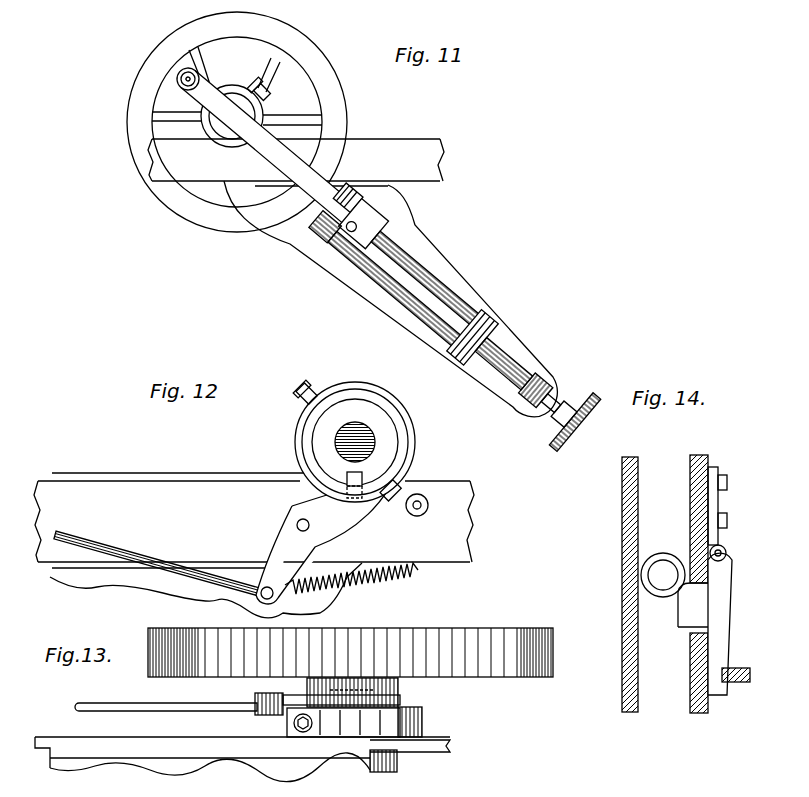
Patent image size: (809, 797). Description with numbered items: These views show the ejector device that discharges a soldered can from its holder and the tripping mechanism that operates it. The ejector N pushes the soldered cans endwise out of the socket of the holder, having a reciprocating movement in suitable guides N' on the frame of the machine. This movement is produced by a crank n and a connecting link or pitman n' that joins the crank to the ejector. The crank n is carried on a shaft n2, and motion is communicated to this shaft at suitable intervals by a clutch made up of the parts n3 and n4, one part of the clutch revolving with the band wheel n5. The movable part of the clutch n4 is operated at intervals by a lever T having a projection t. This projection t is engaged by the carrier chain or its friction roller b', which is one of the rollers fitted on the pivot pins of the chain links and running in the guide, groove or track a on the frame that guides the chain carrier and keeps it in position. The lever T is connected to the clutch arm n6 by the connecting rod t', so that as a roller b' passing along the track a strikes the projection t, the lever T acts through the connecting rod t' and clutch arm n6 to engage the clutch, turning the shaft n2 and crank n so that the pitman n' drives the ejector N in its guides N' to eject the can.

In FIG. 11, the crank n is at (182, 112).
In FIG. 11, the connecting link or pitman n' is at (279, 152).
In FIG. 11, the band wheel n5 is at (237, 122).
In FIG. 13, the band wheel n5 is at (350, 652).
In FIG. 11, the guides N' is at (424, 297).
In FIG. 11, the ejector N is at (553, 402).
In FIG. 12, the shaft n2 is at (380, 441).
In FIG. 12, the clutch part n3 is at (343, 478).
In FIG. 13, the clutch part n3 is at (357, 703).
In FIG. 13, the movable clutch part n4 is at (357, 680).
In FIG. 12, the clutch arm n6 is at (337, 540).
In FIG. 13, the clutch arm n6 is at (307, 698).
In FIG. 12, the connecting rod t' is at (160, 558).
In FIG. 13, the connecting rod t' is at (166, 694).
In FIG. 14, the guide groove or track a is at (622, 531).
In FIG. 14, the friction roller b' is at (637, 575).
In FIG. 14, the projection t is at (678, 611).
In FIG. 14, the lever T is at (723, 620).